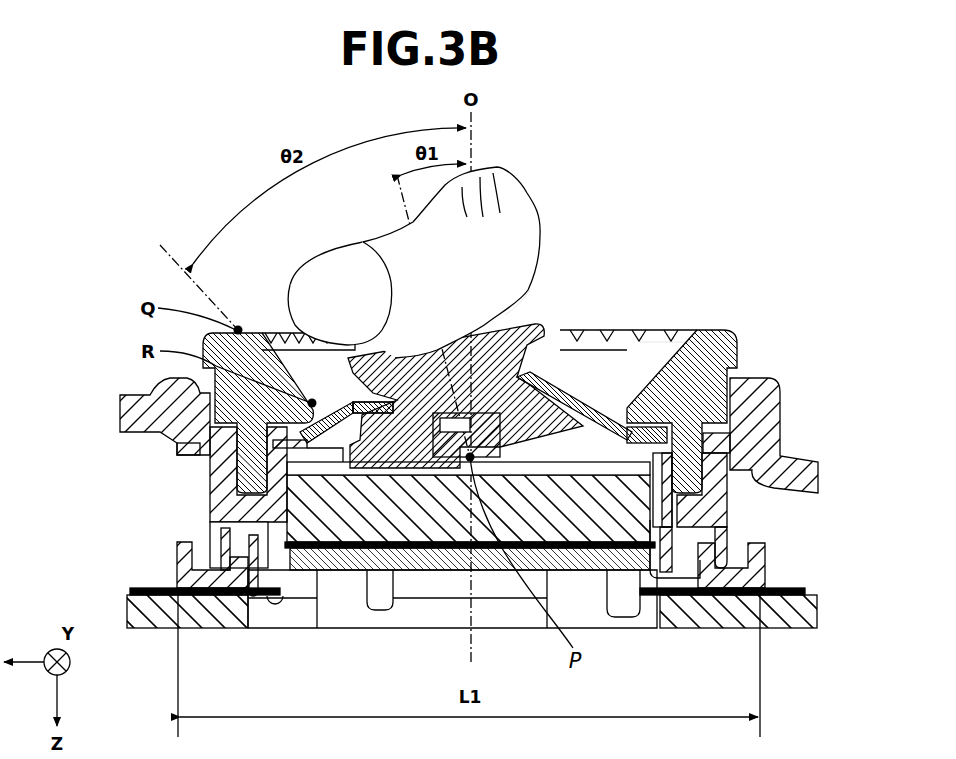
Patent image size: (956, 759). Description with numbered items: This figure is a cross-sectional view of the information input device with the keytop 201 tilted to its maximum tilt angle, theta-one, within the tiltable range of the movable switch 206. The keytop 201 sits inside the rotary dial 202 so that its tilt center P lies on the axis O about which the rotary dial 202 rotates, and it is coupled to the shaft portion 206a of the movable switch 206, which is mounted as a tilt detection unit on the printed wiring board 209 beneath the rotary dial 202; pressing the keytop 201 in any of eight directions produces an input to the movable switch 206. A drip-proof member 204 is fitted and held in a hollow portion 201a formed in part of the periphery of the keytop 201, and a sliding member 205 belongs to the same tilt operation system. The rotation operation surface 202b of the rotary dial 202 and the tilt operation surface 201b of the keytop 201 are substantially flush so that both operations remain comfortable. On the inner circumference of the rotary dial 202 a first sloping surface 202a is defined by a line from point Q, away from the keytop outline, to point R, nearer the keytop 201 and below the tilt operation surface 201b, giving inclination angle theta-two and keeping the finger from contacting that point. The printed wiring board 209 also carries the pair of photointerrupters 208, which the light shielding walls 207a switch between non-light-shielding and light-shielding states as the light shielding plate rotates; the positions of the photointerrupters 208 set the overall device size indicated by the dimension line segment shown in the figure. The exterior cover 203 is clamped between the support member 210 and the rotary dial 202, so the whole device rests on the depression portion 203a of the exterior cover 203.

The keytop 201 is at (390, 357).
The hollow portion 201a is at (538, 365).
The tilt operation surface 201b is at (490, 322).
The rotary dial 202 is at (740, 352).
The first sloping surface 202a is at (636, 345).
The rotation operation surface 202b is at (700, 332).
The exterior cover 203 is at (120, 408).
The depression portion 203a is at (180, 443).
The drip-proof member 204 is at (232, 433).
The sliding member 205 is at (270, 433).
The movable switch 206 is at (458, 520).
The shaft portion 206a is at (362, 572).
The light shielding walls 207a is at (728, 545).
The photointerrupters 208 is at (177, 558).
The printed wiring board 209 is at (203, 598).
The support member 210 is at (780, 457).